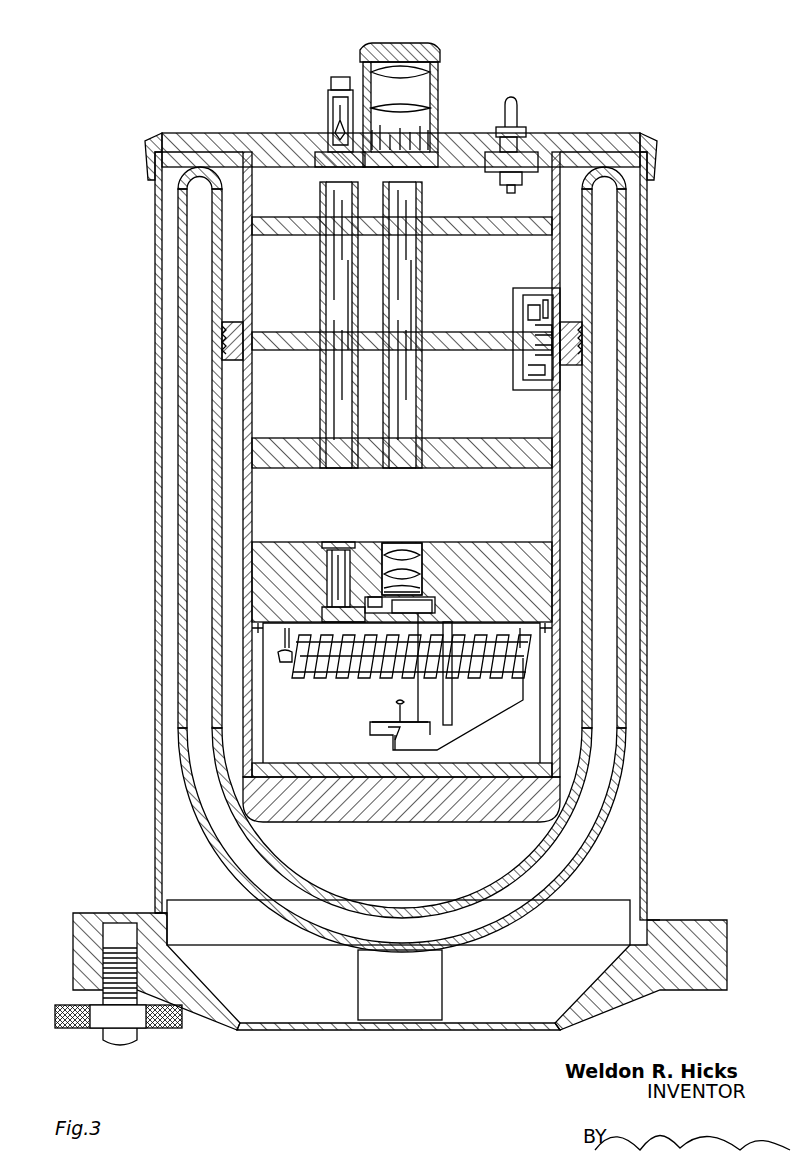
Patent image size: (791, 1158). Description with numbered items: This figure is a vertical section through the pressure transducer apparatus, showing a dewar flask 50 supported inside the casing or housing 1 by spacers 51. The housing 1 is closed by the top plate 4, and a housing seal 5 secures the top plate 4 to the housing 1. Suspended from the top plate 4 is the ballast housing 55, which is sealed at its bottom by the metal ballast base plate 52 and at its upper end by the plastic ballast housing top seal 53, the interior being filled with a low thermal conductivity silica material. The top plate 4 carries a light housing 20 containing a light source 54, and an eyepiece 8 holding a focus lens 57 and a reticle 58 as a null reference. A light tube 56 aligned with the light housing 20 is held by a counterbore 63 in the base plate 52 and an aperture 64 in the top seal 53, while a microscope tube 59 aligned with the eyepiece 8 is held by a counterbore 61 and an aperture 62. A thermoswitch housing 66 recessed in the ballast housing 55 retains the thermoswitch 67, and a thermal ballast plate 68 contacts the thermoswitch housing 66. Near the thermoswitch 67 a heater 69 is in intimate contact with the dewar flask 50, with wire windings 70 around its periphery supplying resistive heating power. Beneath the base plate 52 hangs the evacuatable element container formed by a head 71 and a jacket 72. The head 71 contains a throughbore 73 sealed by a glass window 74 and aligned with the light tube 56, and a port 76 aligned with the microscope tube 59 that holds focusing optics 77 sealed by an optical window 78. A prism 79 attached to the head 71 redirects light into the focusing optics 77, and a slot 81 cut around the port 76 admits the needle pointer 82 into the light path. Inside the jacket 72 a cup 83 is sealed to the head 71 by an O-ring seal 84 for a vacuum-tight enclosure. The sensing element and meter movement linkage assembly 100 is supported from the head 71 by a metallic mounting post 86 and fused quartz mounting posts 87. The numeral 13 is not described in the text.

The casing or housing 1 is at (648, 488).
The top plate 4 is at (223, 134).
The housing seal 5 is at (650, 140).
The eyepiece 8 is at (428, 45).
The switch 13 is at (514, 100).
The light housing 20 is at (330, 90).
The dewar flask 50 is at (628, 312).
The spacers 51 is at (178, 204).
The ballast base plate 52 is at (480, 455).
The ballast housing top seal 53 is at (500, 232).
The light source 54 is at (338, 135).
The ballast housing 55 is at (560, 215).
The light tube 56 is at (322, 292).
The focus lens 57 is at (415, 72).
The reticle 58 is at (405, 108).
The microscope tube 59 is at (420, 286).
The counterbore 61 is at (420, 440).
The aperture 62 is at (420, 218).
The counterbore 63 is at (322, 436).
The aperture 64 is at (322, 218).
The thermoswitch housing 66 is at (515, 297).
The thermoswitch 67 is at (530, 330).
The thermal ballast plate 68 is at (433, 350).
The heater 69 is at (568, 322).
The wire windings 70 is at (584, 345).
The head 71 is at (485, 552).
The jacket 72 is at (515, 820).
The throughbore 73 is at (345, 548).
The glass window 74 is at (328, 545).
The port 76 is at (398, 545).
The focusing optics 77 is at (420, 574).
The optical window 78 is at (425, 590).
The prism 79 is at (350, 616).
The slot 81 is at (378, 600).
The needle pointer 82 is at (434, 608).
The cup 83 is at (540, 722).
The O-ring seal 84 is at (548, 630).
The metallic mounting post 86 is at (454, 706).
The fused quartz mounting posts 87 is at (280, 655).
The sensing element and meter movement linkage assembly 100 is at (346, 722).